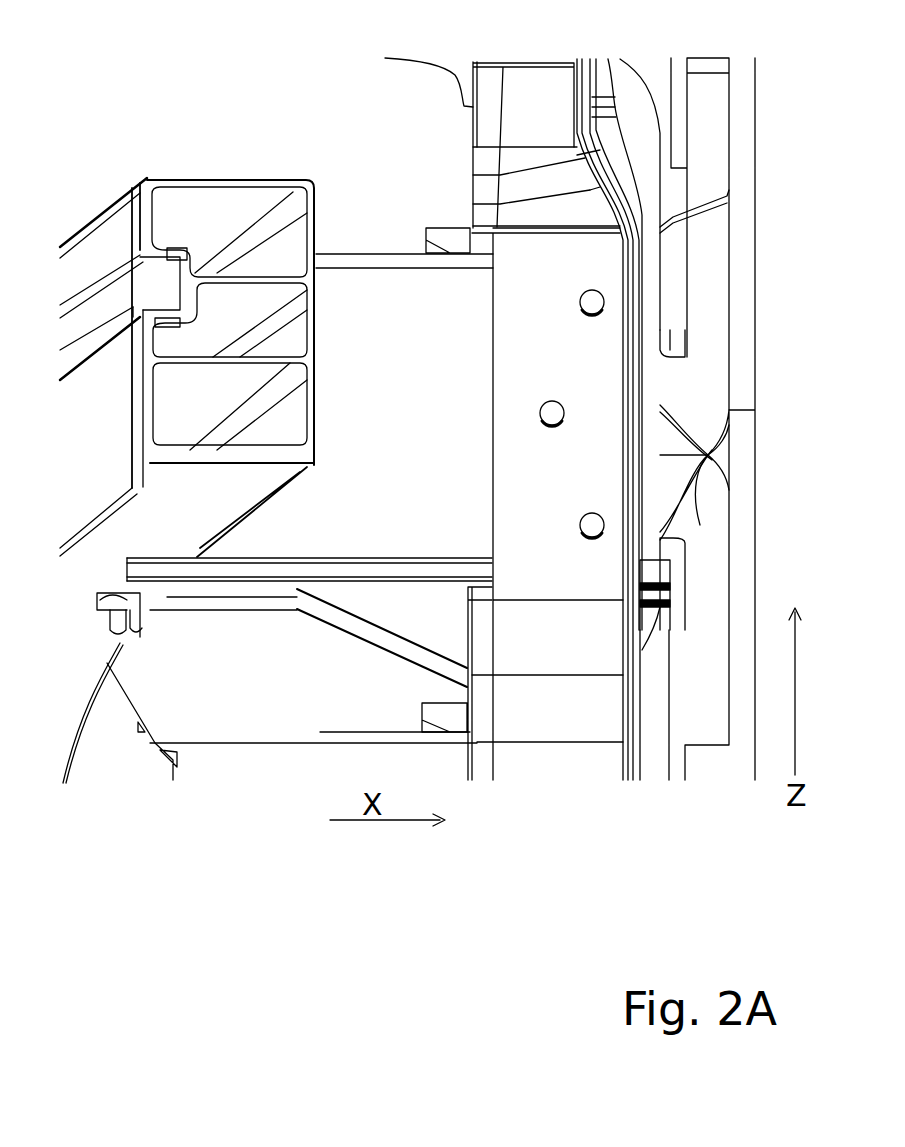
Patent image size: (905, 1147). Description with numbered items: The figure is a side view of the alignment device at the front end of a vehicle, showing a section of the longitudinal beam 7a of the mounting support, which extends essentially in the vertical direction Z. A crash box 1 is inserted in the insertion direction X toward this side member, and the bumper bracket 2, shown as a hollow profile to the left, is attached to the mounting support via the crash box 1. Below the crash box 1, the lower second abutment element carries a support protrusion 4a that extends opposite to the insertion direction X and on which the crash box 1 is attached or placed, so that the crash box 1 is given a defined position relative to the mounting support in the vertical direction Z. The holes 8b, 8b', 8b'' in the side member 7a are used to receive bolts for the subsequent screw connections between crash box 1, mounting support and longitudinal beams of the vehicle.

The crash box 1 is at (386, 504).
The bumper bracket 2 is at (197, 207).
The support protrusion 4a is at (392, 597).
The longitudinal beam 7a is at (589, 812).
The hole 8b is at (555, 386).
The hole 8b' is at (560, 286).
The hole 8b'' is at (558, 506).